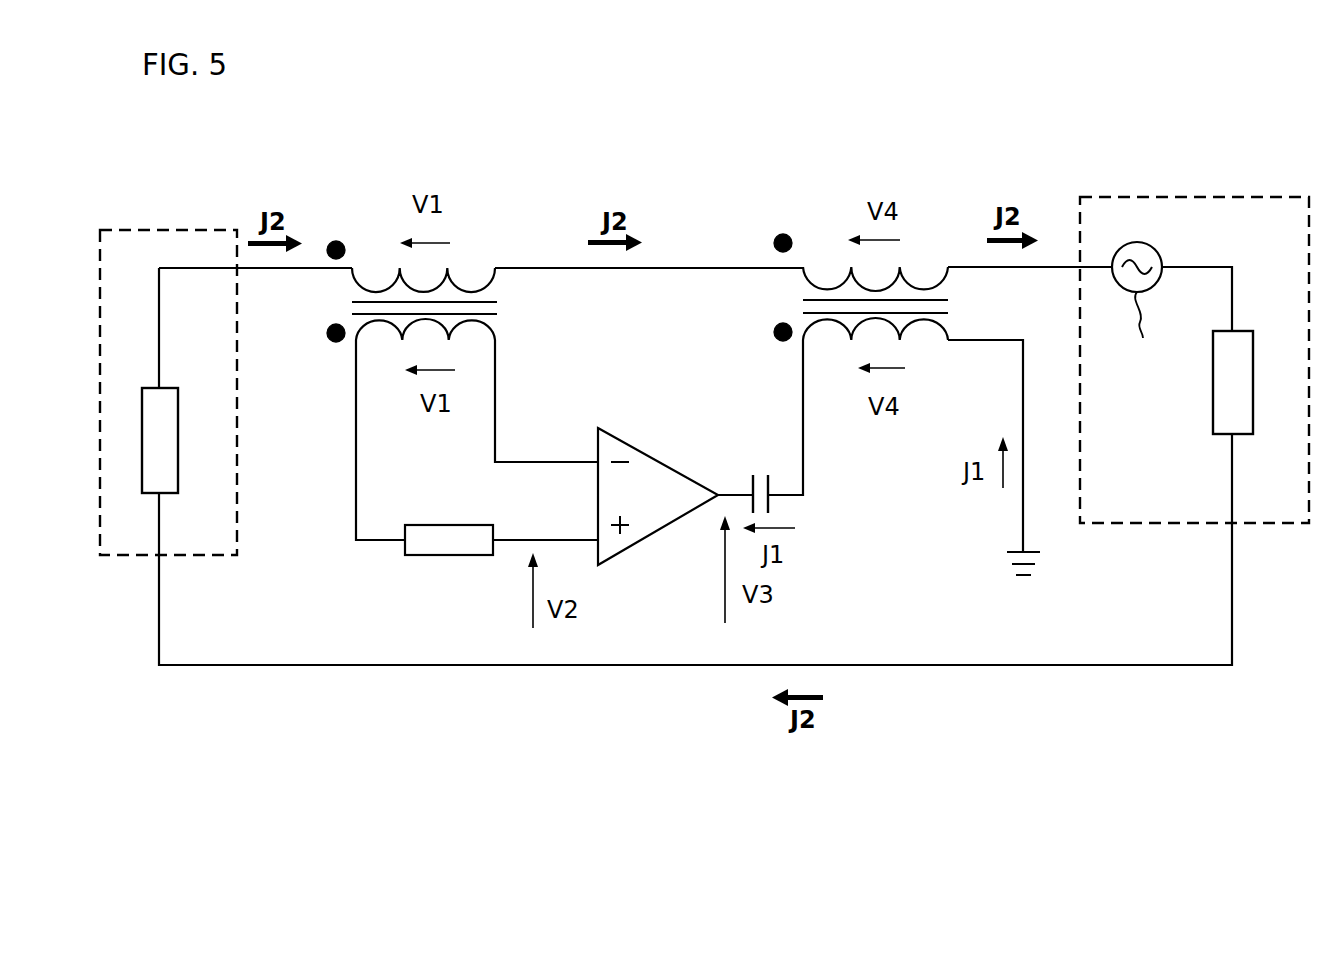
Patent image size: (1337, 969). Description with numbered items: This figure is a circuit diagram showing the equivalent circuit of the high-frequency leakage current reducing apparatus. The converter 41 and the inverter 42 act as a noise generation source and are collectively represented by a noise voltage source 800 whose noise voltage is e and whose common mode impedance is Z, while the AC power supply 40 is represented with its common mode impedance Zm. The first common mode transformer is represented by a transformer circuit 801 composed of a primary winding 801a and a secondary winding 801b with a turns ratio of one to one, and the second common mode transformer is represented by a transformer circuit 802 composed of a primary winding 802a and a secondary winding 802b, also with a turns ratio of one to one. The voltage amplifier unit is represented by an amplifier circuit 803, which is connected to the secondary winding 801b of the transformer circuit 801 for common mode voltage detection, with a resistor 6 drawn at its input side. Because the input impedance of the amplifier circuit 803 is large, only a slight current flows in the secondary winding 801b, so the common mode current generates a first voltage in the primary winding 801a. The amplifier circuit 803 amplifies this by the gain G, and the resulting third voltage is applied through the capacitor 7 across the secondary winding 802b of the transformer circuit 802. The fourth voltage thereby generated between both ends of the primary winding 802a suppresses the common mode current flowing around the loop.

The AC power supply 40 is at (172, 228).
The noise voltage source 800 is at (1194, 310).
The converter 41 is at (1137, 296).
The inverter 42 is at (1216, 382).
The transformer circuit 801 is at (439, 306).
The primary winding 801a is at (484, 290).
The secondary winding 801b is at (378, 333).
The transformer circuit 802 is at (850, 292).
The primary winding 802a is at (925, 290).
The secondary winding 802b is at (822, 330).
The amplifier circuit 803 is at (657, 532).
The resistor 6 is at (448, 524).
The capacitor 7 is at (748, 478).